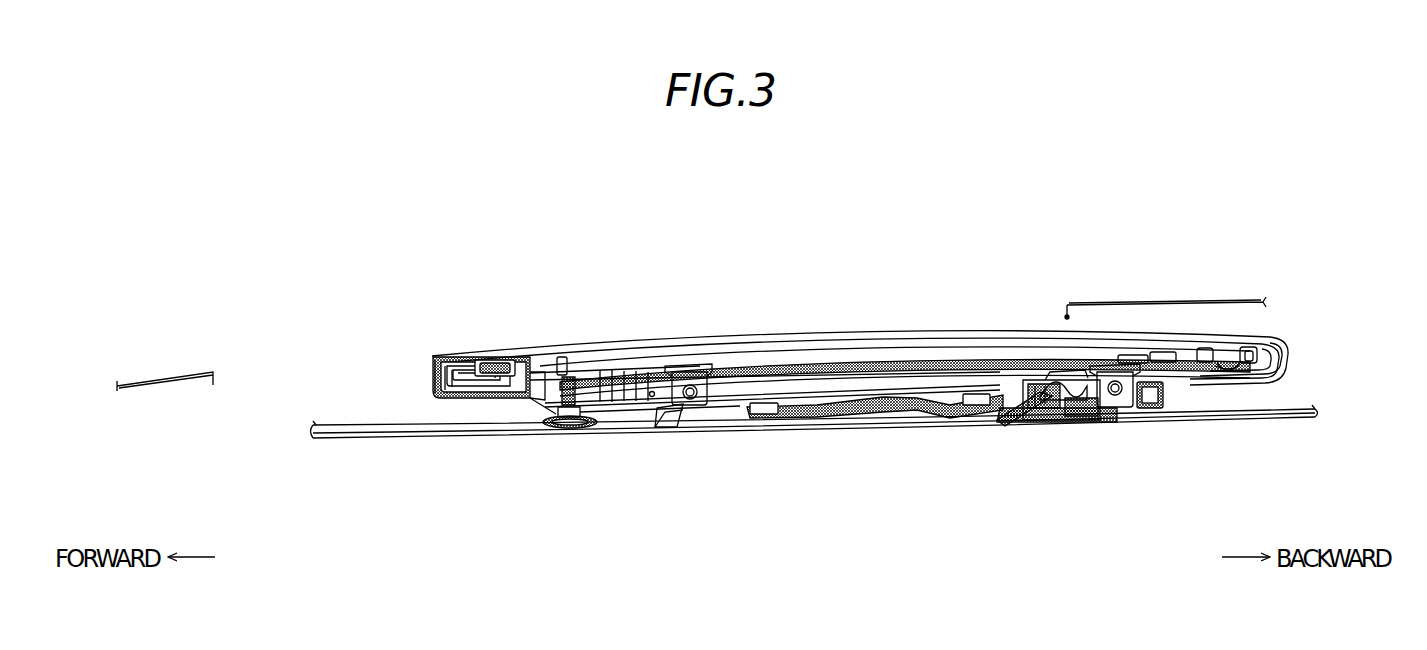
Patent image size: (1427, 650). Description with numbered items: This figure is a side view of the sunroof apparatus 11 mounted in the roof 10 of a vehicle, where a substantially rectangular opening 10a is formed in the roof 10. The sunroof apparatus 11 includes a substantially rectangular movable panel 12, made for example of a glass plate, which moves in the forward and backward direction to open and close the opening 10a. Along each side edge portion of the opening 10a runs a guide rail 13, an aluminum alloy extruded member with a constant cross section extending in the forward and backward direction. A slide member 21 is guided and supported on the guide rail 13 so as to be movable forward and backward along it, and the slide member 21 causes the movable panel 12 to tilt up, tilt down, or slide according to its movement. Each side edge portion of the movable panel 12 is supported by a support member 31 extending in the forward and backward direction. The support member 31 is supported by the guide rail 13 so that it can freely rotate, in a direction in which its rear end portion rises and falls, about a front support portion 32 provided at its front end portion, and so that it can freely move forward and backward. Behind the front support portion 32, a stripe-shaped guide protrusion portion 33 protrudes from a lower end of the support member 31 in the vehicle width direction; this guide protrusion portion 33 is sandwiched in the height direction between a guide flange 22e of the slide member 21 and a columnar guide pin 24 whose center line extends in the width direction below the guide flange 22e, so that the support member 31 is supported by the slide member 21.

The roof 10 is at (1172, 301).
The opening 10a is at (1064, 315).
The sunroof apparatus 11 is at (424, 342).
The movable panel 12 is at (887, 332).
The guide rail 13 is at (1226, 429).
The slide member 21 is at (1019, 426).
The guide flange 22e is at (1062, 373).
The guide pin 24 is at (1067, 425).
The support member 31 is at (1167, 401).
The front support portion 32 is at (565, 432).
The guide protrusion portion 33 is at (847, 413).